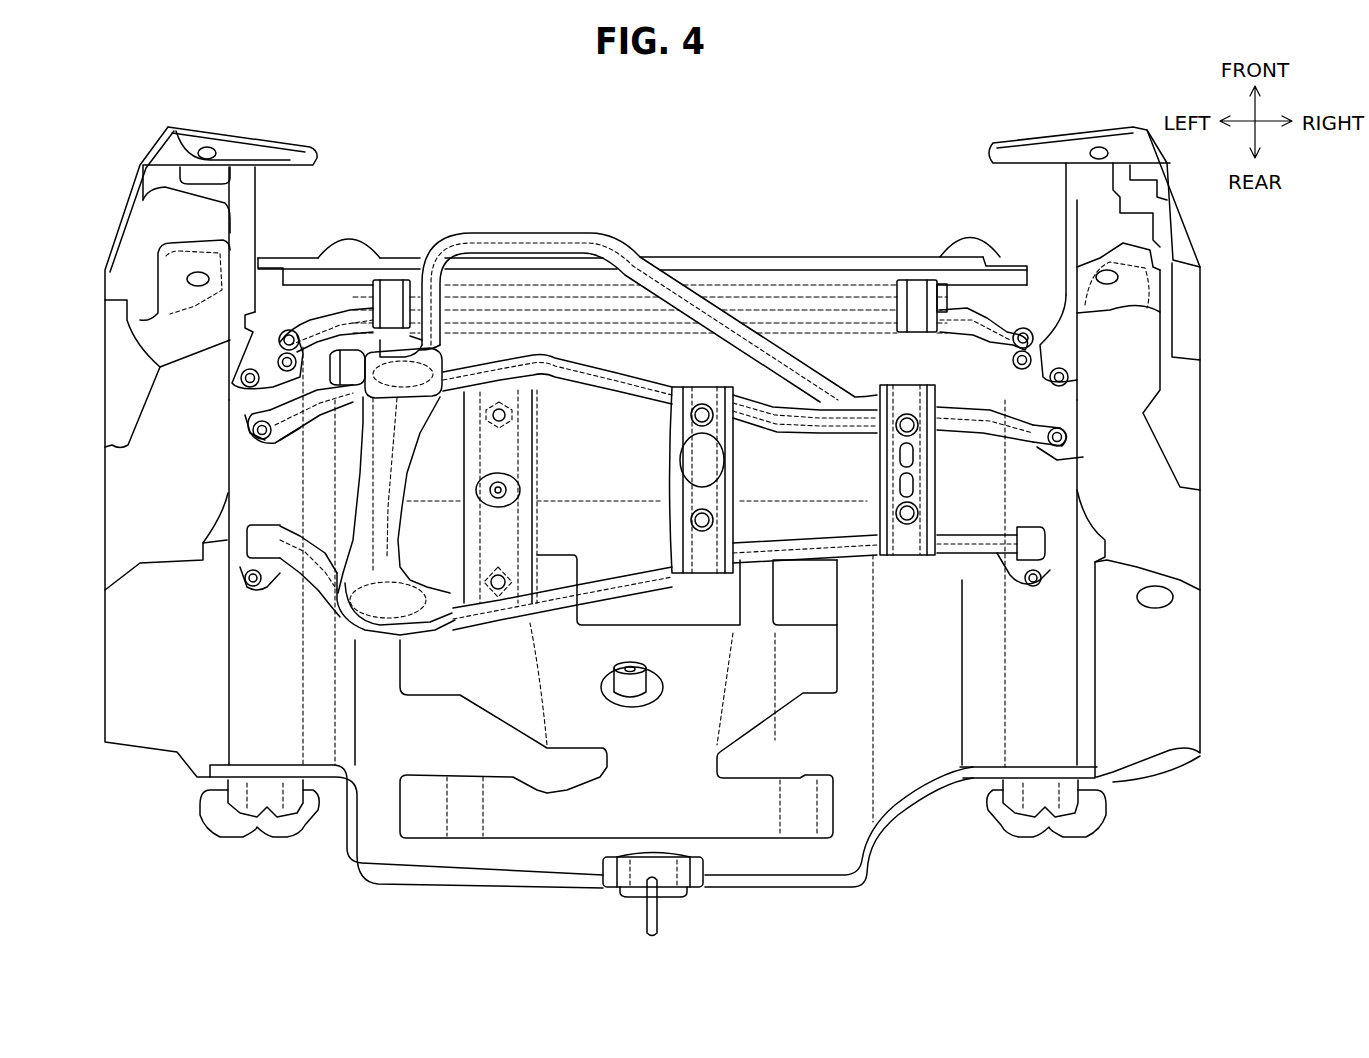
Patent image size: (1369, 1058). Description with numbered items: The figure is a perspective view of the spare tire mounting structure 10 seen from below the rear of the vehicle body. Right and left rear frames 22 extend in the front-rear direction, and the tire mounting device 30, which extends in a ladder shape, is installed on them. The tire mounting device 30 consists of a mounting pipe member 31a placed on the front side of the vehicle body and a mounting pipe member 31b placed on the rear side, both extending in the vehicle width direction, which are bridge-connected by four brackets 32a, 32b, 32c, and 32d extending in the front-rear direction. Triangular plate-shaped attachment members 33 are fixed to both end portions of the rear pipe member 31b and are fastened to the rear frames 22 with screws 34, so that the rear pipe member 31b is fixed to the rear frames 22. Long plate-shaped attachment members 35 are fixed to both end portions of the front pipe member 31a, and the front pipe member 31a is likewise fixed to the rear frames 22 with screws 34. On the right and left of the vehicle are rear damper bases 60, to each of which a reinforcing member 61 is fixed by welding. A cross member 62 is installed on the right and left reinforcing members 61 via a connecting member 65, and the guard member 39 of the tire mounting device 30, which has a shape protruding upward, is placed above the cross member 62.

The spare tire mounting structure 10 is at (650, 162).
The rear frame 22 is at (267, 790).
The tire mounting device 30 is at (527, 218).
The mounting pipe member 31a is at (807, 430).
The mounting pipe member 31b is at (827, 543).
The bracket 32a is at (390, 510).
The bracket 32b is at (543, 425).
The bracket 32c is at (667, 480).
The bracket 32d is at (927, 487).
The attachment member 33 is at (277, 573).
The screw 34 is at (257, 420).
The attachment member 35 is at (280, 440).
The guard member 39 is at (573, 242).
The rear damper base 60 is at (177, 292).
The reinforcing member 61 is at (243, 205).
The cross member 62 is at (772, 257).
The connecting member 65 is at (270, 263).